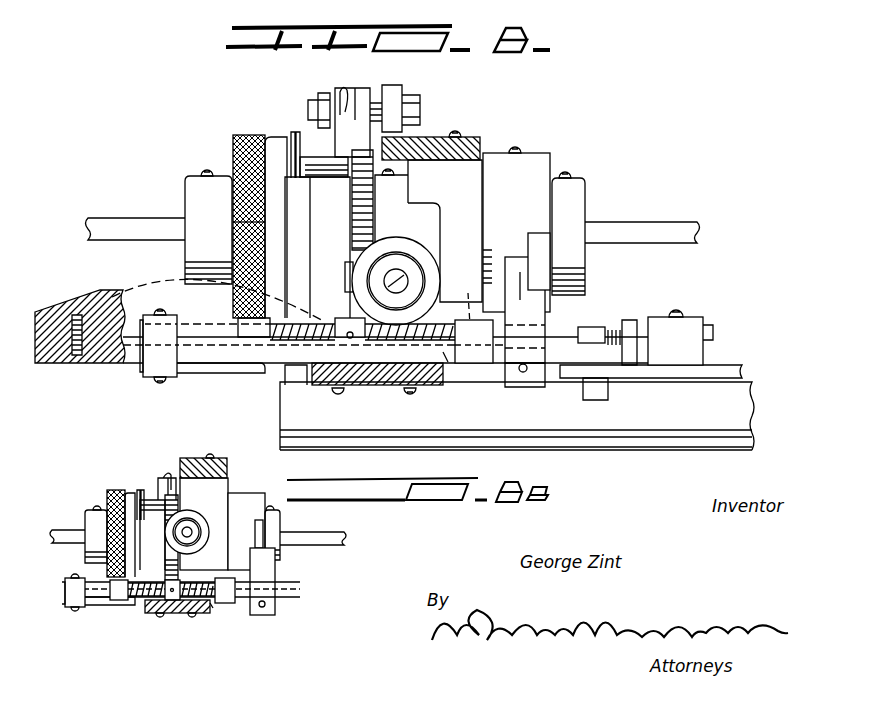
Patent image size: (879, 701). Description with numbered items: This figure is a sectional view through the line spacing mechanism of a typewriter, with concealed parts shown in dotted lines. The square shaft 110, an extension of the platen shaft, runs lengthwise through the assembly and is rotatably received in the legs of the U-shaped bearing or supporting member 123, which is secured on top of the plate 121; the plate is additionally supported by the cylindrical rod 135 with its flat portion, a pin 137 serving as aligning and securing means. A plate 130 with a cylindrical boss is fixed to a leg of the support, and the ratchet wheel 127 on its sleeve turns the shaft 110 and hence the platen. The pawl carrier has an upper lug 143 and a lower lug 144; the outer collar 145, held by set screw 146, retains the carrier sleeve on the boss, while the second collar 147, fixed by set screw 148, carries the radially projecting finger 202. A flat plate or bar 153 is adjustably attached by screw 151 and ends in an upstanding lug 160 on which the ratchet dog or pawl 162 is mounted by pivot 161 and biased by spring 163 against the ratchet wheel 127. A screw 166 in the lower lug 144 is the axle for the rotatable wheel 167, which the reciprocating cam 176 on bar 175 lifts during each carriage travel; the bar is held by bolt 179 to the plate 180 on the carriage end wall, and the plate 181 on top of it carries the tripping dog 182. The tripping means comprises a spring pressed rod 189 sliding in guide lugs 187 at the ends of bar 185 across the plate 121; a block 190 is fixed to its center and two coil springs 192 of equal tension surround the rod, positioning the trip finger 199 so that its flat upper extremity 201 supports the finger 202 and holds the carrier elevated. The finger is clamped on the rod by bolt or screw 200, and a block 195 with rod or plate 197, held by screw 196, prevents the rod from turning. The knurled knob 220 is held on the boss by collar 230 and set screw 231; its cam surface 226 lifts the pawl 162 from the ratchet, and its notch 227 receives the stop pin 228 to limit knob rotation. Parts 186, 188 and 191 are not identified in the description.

In FIG. 8, the square shaft 110 is at (99, 223).
In FIG. 8a, the square shaft 110 is at (52, 533).
In FIG. 8, the plate 121 is at (322, 376).
In FIG. 8a, the plate 121 is at (172, 614).
In FIG. 8, the U-shaped bearing or supporting member 123 is at (247, 223).
In FIG. 8, the ratchet wheel 127 is at (365, 202).
In FIG. 8a, the ratchet wheel 127 is at (171, 537).
In FIG. 8, the plate 130 is at (303, 212).
In FIG. 8a, the plate 130 is at (152, 535).
In FIG. 8, the cylindrical rod 135 is at (668, 430).
In FIG. 8, the pin 137 is at (292, 378).
In FIG. 8, the upper lug 143 is at (425, 168).
In FIG. 8a, the upper lug 143 is at (204, 524).
In FIG. 8, the lower lug 144 is at (346, 271).
In FIG. 8, the outer collar 145 is at (575, 196).
In FIG. 8a, the outer collar 145 is at (280, 528).
In FIG. 8, the set screw 146 is at (571, 173).
In FIG. 8, the second collar 147 is at (534, 161).
In FIG. 8a, the second collar 147 is at (250, 494).
In FIG. 8, the set screw 148 is at (518, 147).
In FIG. 8a, the set screw 148 is at (212, 450).
In FIG. 8, the screw 151 is at (460, 134).
In FIG. 8, the flat plate or bar 153 is at (468, 147).
In FIG. 8a, the flat plate or bar 153 is at (222, 470).
In FIG. 8, the upstanding lug 160 is at (400, 97).
In FIG. 8, the pivot 161 is at (316, 112).
In FIG. 8, the ratchet dog or pawl 162 is at (366, 96).
In FIG. 8a, the ratchet dog or pawl 162 is at (168, 478).
In FIG. 8, the spring 163 is at (347, 90).
In FIG. 8, the screw 166 is at (400, 278).
In FIG. 8, the rotatable wheel 167 is at (428, 279).
In FIG. 8a, the rotatable wheel 167 is at (187, 532).
In FIG. 8, the bar 175 is at (128, 357).
In FIG. 8, the reciprocating cam 176 is at (110, 292).
In FIG. 8, the bolt 179 is at (598, 330).
In FIG. 8, the plate 180 is at (722, 368).
In FIG. 8, the plate 181 is at (692, 325).
In FIG. 8, the tripping dog 182 is at (712, 332).
In FIG. 8, the bar 185 is at (445, 354).
In FIG. 8a, the bar 185 is at (212, 606).
In FIG. 8, the screw 186 is at (412, 396).
In FIG. 8, the guide lugs 187 is at (247, 330).
In FIG. 8a, the guide lugs 187 is at (118, 598).
In FIG. 8, the line 188 is at (466, 302).
In FIG. 8, the spring pressed rod 189 is at (203, 333).
In FIG. 8a, the spring pressed rod 189 is at (292, 593).
In FIG. 8, the block 190 is at (350, 318).
In FIG. 8a, the block 190 is at (170, 598).
In FIG. 8, the hole 191 is at (352, 340).
In FIG. 8, the coil springs 192 is at (288, 345).
In FIG. 8, the block 195 is at (152, 372).
In FIG. 8a, the block 195 is at (66, 596).
In FIG. 8, the screw 196 is at (158, 386).
In FIG. 8a, the screw 196 is at (73, 612).
In FIG. 8, the rod or plate 197 is at (190, 368).
In FIG. 8a, the rod or plate 197 is at (92, 601).
In FIG. 8, the trip finger 199 is at (521, 272).
In FIG. 8, the bolt or screw 200 is at (526, 366).
In FIG. 8a, the bolt or screw 200 is at (265, 608).
In FIG. 8, the flat upper extremity 201 is at (511, 257).
In FIG. 8a, the flat upper extremity 201 is at (256, 548).
In FIG. 8, the lug or finger 202 is at (540, 234).
In FIG. 8a, the lug or finger 202 is at (256, 528).
In FIG. 8, the knurled knob 220 is at (234, 146).
In FIG. 8a, the knurled knob 220 is at (116, 490).
In FIG. 8, the cam surface 226 is at (320, 160).
In FIG. 8, the notch 227 is at (280, 138).
In FIG. 8a, the notch 227 is at (130, 535).
In FIG. 8, the stop pin 228 is at (293, 135).
In FIG. 8a, the stop pin 228 is at (139, 490).
In FIG. 8, the collar 230 is at (188, 195).
In FIG. 8a, the collar 230 is at (86, 517).
In FIG. 8, the set screw 231 is at (202, 173).
In FIG. 8a, the set screw 231 is at (95, 505).